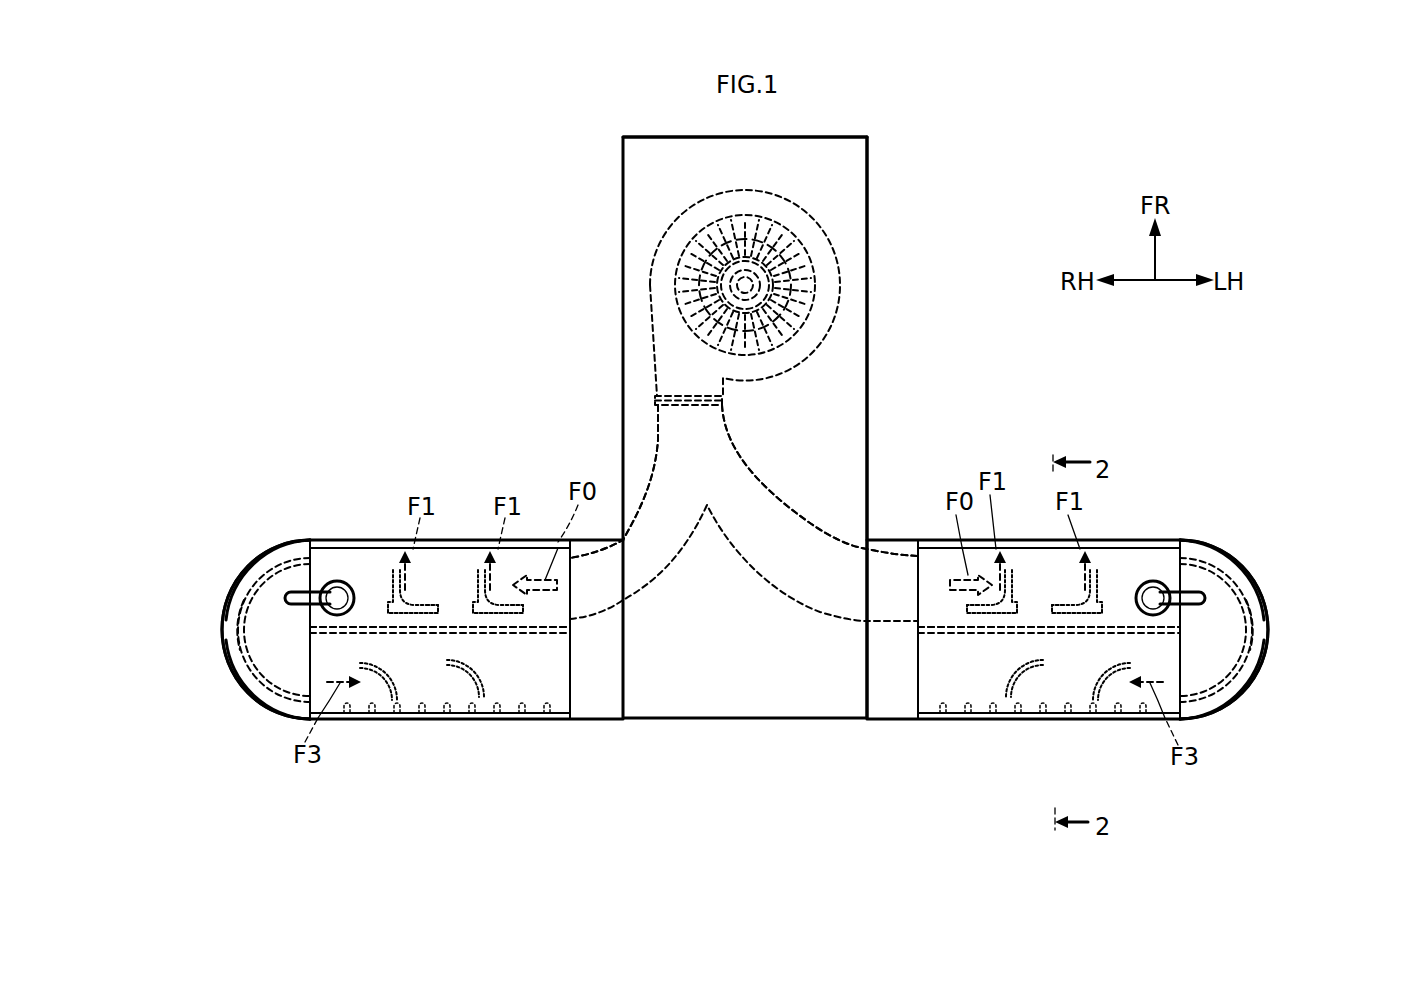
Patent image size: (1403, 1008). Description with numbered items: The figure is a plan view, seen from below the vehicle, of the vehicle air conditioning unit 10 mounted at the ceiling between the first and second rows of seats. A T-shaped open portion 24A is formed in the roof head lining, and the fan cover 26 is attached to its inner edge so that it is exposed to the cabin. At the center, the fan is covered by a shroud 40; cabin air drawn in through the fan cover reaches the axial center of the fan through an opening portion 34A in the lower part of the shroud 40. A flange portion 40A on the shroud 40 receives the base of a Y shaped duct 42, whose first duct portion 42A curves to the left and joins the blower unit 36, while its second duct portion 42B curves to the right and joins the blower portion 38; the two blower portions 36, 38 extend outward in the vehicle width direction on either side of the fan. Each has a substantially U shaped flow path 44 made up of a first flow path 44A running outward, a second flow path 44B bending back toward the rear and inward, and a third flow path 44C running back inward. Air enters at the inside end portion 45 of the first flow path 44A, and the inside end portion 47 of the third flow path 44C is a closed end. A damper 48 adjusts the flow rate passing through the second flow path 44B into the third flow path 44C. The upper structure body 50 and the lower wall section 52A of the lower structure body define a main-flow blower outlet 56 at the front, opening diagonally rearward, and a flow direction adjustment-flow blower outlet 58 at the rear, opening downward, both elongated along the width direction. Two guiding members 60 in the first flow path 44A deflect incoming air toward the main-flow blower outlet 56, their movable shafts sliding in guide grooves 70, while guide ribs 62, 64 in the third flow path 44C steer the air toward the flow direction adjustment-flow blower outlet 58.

The vehicle air conditioning unit 10 is at (1163, 476).
The open portion 24A is at (860, 399).
The fan cover 26 is at (867, 352).
The opening portion 34A is at (758, 268).
The blower unit 36 is at (1147, 763).
The blower portion 38 is at (317, 765).
The shroud 40 is at (838, 259).
The flange portion 40A is at (722, 402).
The Y shaped duct 42 is at (752, 471).
The first duct portion 42A is at (797, 552).
The second duct portion 42B is at (668, 522).
The flow path 44 is at (163, 575).
The first flow path 44A is at (310, 572).
The second flow path 44B is at (256, 613).
The third flow path 44C is at (310, 655).
The vehicle width direction inside end portion 45 is at (572, 590).
The vehicle width direction inside end portion 47 is at (582, 717).
The damper 48 is at (296, 600).
The upper structure body 50 is at (445, 543).
The lower wall section 52A is at (931, 546).
The main-flow blower outlet 56 is at (348, 541).
The flow direction adjustment-flow blower outlet 58 is at (357, 718).
The guiding member 60 is at (393, 592).
The guide rib 62 is at (394, 703).
The guide rib 64 is at (458, 702).
The guide groove 70 is at (428, 613).